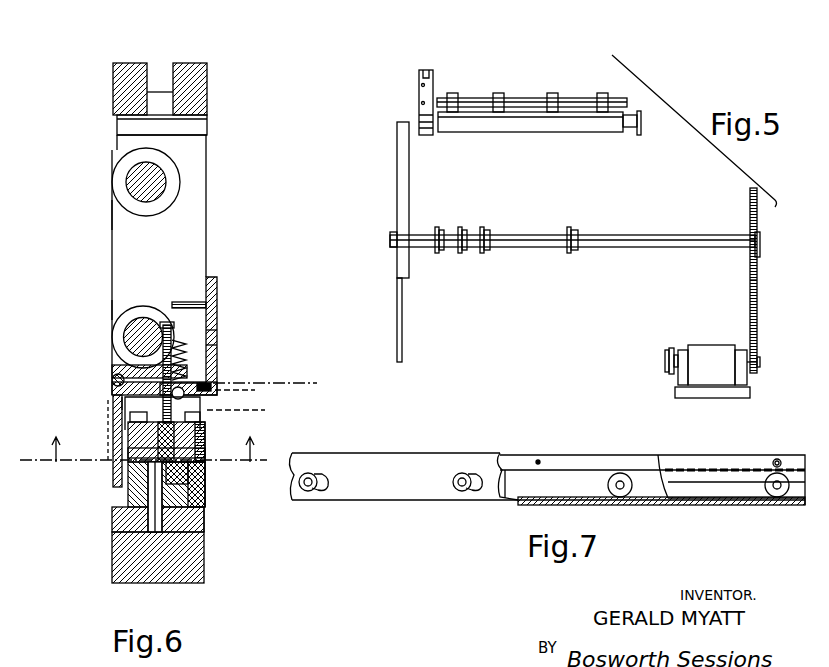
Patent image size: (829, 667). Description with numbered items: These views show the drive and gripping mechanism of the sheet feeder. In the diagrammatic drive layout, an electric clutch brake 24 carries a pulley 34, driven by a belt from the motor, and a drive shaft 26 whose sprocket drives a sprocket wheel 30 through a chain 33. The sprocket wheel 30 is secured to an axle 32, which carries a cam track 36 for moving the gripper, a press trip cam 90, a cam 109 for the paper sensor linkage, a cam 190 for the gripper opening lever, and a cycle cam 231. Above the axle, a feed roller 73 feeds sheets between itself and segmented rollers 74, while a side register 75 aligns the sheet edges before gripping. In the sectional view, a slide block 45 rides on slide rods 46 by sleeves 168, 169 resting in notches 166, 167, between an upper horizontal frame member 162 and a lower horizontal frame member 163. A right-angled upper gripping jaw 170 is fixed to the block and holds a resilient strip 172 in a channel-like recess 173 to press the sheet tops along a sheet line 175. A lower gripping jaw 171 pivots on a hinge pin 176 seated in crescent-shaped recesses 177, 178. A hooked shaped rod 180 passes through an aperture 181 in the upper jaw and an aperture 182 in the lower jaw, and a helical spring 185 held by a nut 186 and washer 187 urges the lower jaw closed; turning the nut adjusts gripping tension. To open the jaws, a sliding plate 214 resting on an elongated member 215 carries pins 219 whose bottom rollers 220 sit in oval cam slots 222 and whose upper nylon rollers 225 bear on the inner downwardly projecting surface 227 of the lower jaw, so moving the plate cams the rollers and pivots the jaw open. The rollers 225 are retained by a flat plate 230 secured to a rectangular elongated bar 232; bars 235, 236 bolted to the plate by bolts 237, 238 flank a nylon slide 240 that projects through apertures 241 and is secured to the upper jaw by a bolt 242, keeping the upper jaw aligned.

In FIG. 6, the upper horizontal frame member 162 is at (127, 62).
In FIG. 6, the sleeve 168 is at (120, 157).
In FIG. 6, the slide rod 46 is at (128, 176).
In FIG. 6, the notch 166 is at (112, 200).
In FIG. 6, the slide block 45 is at (205, 218).
In FIG. 6, the notch 167 is at (112, 318).
In FIG. 6, the sleeve 169 is at (117, 325).
In FIG. 6, the nut 186 is at (167, 322).
In FIG. 6, the washer 187 is at (217, 282).
In FIG. 6, the helical spring 185 is at (190, 338).
In FIG. 6, the aperture 181 is at (225, 320).
In FIG. 6, the upper gripping jaw 170 is at (225, 332).
In FIG. 6, the channel-like recess 173 is at (225, 348).
In FIG. 6, the resilient strip 172 is at (213, 378).
In FIG. 6, the crescent-shaped recess 177 is at (135, 365).
In FIG. 6, the hinge pin 176 is at (118, 375).
In FIG. 6, the crescent-shaped recess 178 is at (112, 385).
In FIG. 6, the sheet line 175 is at (303, 378).
In FIG. 6, the hooked shaped rod 180 is at (184, 395).
In FIG. 6, the aperture 182 is at (249, 390).
In FIG. 6, the bolt 242 is at (250, 408).
In FIG. 6, the bolt 238 is at (207, 417).
In FIG. 7, the bolt 238 is at (776, 459).
In FIG. 6, the elongated bar 236 is at (202, 440).
In FIG. 7, the elongated bar 236 is at (696, 462).
In FIG. 6, the aperture 241 is at (112, 398).
In FIG. 6, the bolt 237 is at (125, 410).
In FIG. 6, the elongated bar 235 is at (128, 425).
In FIG. 7, the elongated bar 235 is at (742, 488).
In FIG. 6, the nylon slide 240 is at (125, 446).
In FIG. 6, the inner downwardly projecting surface 227 is at (110, 462).
In FIG. 7, the inner downwardly projecting surface 227 is at (538, 495).
In FIG. 6, the lower gripping jaw 171 is at (118, 467).
In FIG. 6, the sliding plate 214 is at (120, 490).
In FIG. 7, the sliding plate 214 is at (578, 480).
In FIG. 6, the flat plate 230 is at (205, 460).
In FIG. 6, the nylon roller 225 is at (195, 485).
In FIG. 7, the nylon roller 225 is at (635, 495).
In FIG. 6, the rectangular elongated bar 232 is at (210, 505).
In FIG. 7, the rectangular elongated bar 232 is at (502, 455).
In FIG. 6, the elongated member 215 is at (205, 530).
In FIG. 6, the roller 220 is at (132, 516).
In FIG. 7, the roller 220 is at (476, 478).
In FIG. 6, the pin 219 is at (150, 530).
In FIG. 7, the pin 219 is at (310, 473).
In FIG. 6, the lower horizontal frame member 163 is at (112, 577).
In FIG. 5, the cam track 36 is at (410, 185).
In FIG. 5, the feed roller 73 is at (575, 122).
In FIG. 5, the side register 75 is at (575, 108).
In FIG. 5, the segmented roller 74 is at (600, 93).
In FIG. 5, the axle 32 is at (650, 250).
In FIG. 5, the cam 190 is at (440, 254).
In FIG. 5, the cam 109 is at (462, 254).
In FIG. 5, the cam 90 is at (488, 254).
In FIG. 5, the cycle cam 231 is at (572, 254).
In FIG. 5, the sprocket wheel 30 is at (760, 272).
In FIG. 5, the chain 33 is at (758, 318).
In FIG. 5, the electric clutch brake 24 is at (712, 345).
In FIG. 5, the pulley 34 is at (668, 348).
In FIG. 5, the drive shaft 26 is at (762, 366).
In FIG. 7, the oval cam slot 222 is at (325, 492).